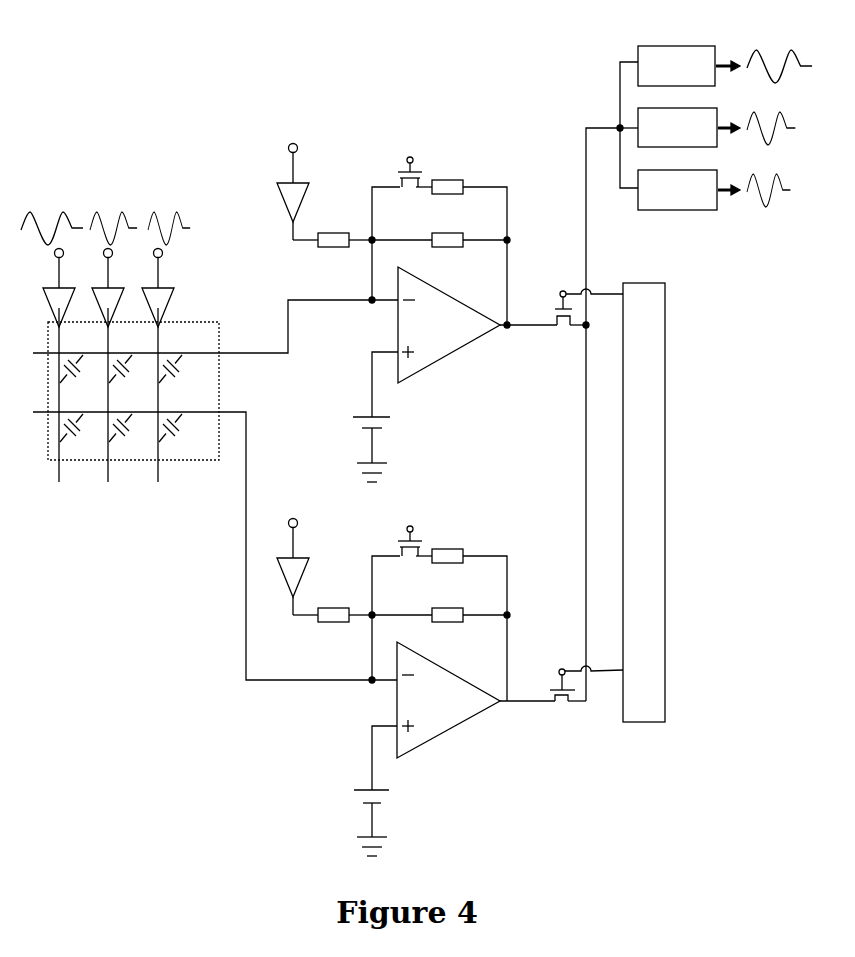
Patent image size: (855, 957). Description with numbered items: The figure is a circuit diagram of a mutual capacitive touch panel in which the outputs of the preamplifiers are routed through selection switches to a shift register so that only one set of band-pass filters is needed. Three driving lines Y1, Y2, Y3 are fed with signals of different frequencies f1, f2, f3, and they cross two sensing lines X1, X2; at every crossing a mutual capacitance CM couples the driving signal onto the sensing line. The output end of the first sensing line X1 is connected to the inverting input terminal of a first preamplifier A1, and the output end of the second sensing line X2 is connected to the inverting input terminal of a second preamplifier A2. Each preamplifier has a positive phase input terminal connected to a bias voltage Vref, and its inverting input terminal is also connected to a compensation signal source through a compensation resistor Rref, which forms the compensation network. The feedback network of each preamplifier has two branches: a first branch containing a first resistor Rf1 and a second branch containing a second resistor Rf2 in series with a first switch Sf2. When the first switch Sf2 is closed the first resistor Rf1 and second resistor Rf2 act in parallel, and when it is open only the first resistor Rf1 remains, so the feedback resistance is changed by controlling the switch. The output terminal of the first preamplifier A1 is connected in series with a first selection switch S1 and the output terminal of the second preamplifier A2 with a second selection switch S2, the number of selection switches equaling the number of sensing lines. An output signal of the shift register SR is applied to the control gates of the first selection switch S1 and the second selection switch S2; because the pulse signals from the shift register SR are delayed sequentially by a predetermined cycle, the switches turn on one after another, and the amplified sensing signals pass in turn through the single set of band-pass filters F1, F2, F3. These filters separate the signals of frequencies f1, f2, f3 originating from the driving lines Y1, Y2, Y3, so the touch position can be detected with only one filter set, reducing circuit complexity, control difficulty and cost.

The first frequency signal f1 is at (416, 138).
The second frequency signal f2 is at (442, 169).
The third frequency signal f3 is at (469, 200).
The first sensing line X1 is at (211, 325).
The second sensing line X2 is at (210, 538).
The first driving line Y1 is at (58, 410).
The second driving line Y2 is at (106, 410).
The third driving line Y3 is at (162, 410).
The mutual capacitance CM is at (130, 409).
The compensation resistor Rref is at (332, 412).
The first resistor Rf1 is at (439, 415).
The second resistor Rf2 is at (439, 431).
The first switch Sf2 is at (410, 341).
The first preamplifier A1 is at (449, 328).
The second preamplifier A2 is at (448, 708).
The bias voltage Vref is at (393, 604).
The first selection switch S1 is at (587, 296).
The second selection switch S2 is at (586, 673).
The shift register SR is at (644, 490).
The first band-pass filter F1 is at (689, 51).
The second band-pass filter F2 is at (689, 117).
The third band-pass filter F3 is at (689, 181).